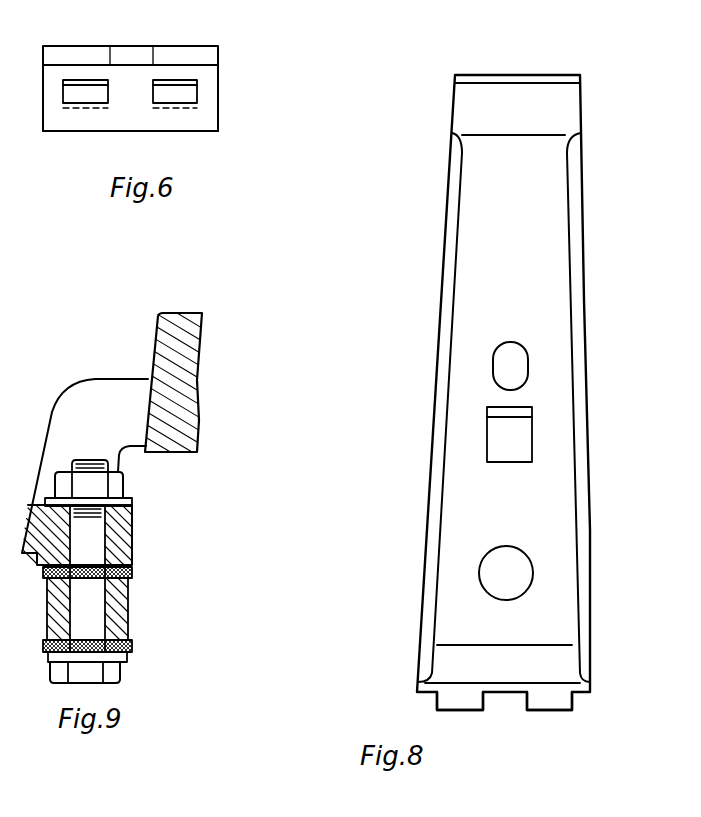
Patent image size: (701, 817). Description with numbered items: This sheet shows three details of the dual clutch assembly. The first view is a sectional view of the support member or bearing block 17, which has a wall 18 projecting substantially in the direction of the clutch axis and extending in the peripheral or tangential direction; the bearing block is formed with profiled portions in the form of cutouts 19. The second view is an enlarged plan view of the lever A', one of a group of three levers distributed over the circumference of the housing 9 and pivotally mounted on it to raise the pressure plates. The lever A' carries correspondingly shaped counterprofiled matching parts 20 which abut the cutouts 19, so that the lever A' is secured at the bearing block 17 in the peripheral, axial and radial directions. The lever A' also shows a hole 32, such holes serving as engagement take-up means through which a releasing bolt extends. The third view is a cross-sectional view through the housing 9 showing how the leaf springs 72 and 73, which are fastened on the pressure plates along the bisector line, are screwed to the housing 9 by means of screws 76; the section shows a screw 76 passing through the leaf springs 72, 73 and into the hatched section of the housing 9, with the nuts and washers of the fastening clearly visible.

In FIG. 6, the support member 17 is at (283, 116).
In FIG. 6, the wall 18 is at (205, 115).
In FIG. 6, the cutouts 19 is at (187, 92).
In FIG. 9, the housing 9 is at (185, 377).
In FIG. 9, the screws 76 is at (95, 538).
In FIG. 9, the leaf spring 73 is at (130, 577).
In FIG. 9, the leaf spring 72 is at (128, 648).
In FIG. 8, the lever A' is at (528, 392).
In FIG. 8, the hole 32 is at (517, 370).
In FIG. 8, the counterprofiled matching parts 20 is at (572, 720).